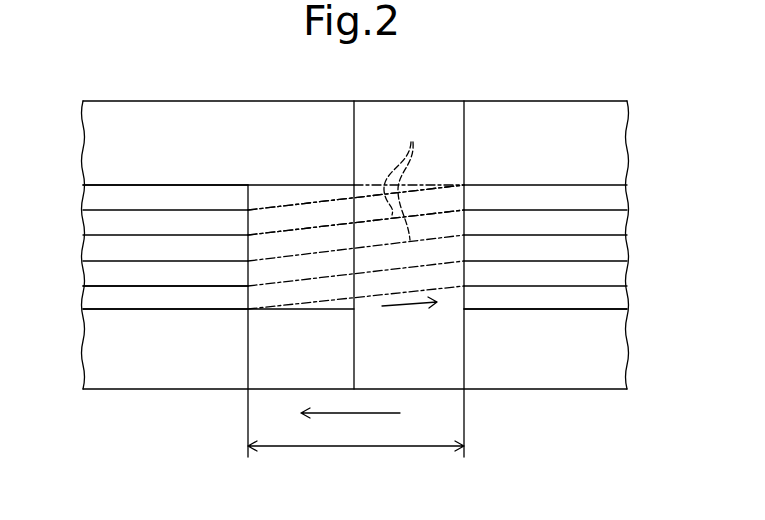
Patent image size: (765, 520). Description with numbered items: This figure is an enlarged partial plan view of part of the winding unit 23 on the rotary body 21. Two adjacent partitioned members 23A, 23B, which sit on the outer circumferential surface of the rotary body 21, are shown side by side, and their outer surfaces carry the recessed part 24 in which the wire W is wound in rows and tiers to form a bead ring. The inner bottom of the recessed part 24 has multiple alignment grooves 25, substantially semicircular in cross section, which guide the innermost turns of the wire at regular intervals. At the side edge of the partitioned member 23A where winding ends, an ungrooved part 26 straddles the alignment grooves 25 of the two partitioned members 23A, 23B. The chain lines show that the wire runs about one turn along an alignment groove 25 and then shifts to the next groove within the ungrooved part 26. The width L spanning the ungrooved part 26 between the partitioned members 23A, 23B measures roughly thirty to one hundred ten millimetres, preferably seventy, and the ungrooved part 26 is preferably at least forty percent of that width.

The rotary body 21 is at (416, 108).
The winding unit 23 is at (177, 100).
The partitioned member 23A is at (258, 112).
The partitioned member 23B is at (543, 105).
The recessed part 24 is at (163, 306).
The alignment grooves 25 is at (90, 250).
The ungrooved part 26 is at (300, 185).